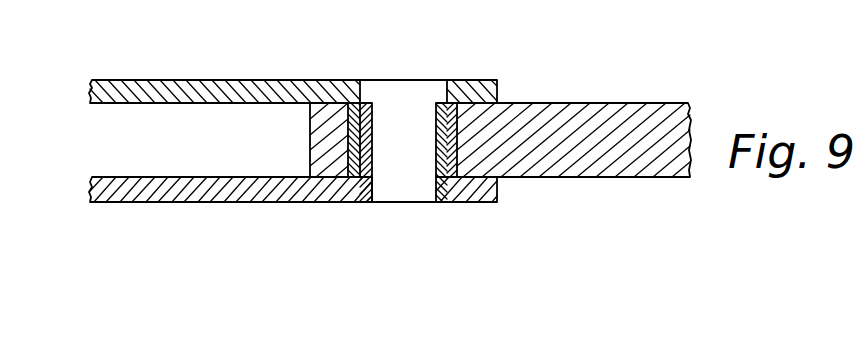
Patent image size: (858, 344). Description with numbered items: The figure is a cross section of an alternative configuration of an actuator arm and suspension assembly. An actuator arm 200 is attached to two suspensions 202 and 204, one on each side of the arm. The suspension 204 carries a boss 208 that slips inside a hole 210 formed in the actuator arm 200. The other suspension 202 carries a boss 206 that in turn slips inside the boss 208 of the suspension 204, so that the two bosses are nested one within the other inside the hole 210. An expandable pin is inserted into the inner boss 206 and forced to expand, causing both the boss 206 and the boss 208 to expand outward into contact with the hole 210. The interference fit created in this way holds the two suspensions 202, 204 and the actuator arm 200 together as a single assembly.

The actuator arm 200 is at (629, 96).
The suspension 202 is at (231, 208).
The suspension 204 is at (240, 74).
The boss 206 is at (437, 147).
The boss 208 is at (350, 162).
The hole 210 is at (437, 138).